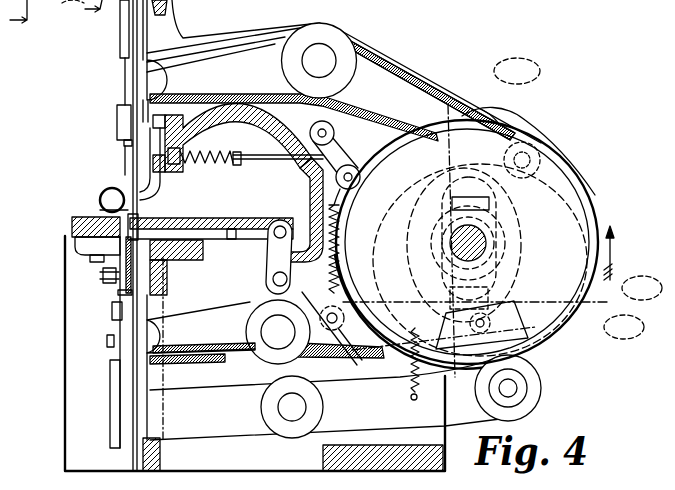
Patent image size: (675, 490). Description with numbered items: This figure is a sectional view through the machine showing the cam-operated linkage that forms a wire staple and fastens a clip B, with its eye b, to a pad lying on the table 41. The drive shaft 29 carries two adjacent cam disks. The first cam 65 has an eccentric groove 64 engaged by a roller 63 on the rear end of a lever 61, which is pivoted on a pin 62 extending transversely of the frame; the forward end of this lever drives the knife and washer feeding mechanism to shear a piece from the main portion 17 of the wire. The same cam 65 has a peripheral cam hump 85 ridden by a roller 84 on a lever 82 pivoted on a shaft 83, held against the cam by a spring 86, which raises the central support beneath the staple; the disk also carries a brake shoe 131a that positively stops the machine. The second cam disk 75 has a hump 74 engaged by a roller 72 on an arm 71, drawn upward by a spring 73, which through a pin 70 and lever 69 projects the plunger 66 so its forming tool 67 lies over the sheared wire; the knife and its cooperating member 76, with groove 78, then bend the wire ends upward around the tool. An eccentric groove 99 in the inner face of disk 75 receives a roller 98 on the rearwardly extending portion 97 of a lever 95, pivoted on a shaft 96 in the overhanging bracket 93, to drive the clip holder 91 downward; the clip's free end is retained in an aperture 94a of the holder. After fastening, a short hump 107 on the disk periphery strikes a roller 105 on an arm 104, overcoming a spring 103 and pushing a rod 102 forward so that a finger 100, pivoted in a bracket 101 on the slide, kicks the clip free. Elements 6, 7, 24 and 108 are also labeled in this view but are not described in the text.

The view arrow 6 is at (82, 9).
The view arrow 7 is at (13, 14).
The main portion of the wire 17 is at (117, 261).
The frame 24 is at (68, 334).
The drive shaft 29 is at (484, 228).
The table 41 is at (100, 216).
The lever 61 is at (190, 336).
The pin 62 is at (285, 340).
The roller 63 is at (506, 307).
The eccentric groove 64 is at (528, 295).
The cam 65 is at (577, 242).
The plunger 66 is at (170, 233).
The forming tool 67 is at (176, 267).
The lever 69 is at (268, 266).
The pin 70 is at (279, 281).
The arm 71 is at (287, 306).
The roller 72 is at (362, 348).
The spring 73 is at (341, 263).
The hump 74 is at (493, 111).
The cam disk 75 is at (590, 191).
The cooperating member 76 is at (116, 283).
The groove 78 is at (135, 222).
The lever 82 is at (173, 437).
The shaft 83 is at (300, 411).
The roller 84 is at (542, 389).
The cam hump 85 is at (413, 368).
The spring 86 is at (419, 388).
The clip holder 91 is at (104, 198).
The overhanging bracket 93 is at (170, 35).
The aperture 94a is at (117, 183).
The lever 95 is at (253, 57).
The shaft 96 is at (336, 55).
The rearwardly extending portion 97 is at (430, 94).
The roller 98 is at (541, 148).
The eccentric groove 99 is at (518, 126).
The finger 100 is at (159, 185).
The bracket 101 is at (162, 109).
The rod 102 is at (250, 160).
The spring 103 is at (232, 138).
The arm 104 is at (333, 137).
The roller 105 is at (320, 190).
The hump 107 is at (460, 115).
The belt 108 is at (383, 136).
The brake shoe 131a is at (519, 333).
The clip B is at (72, 229).
The eye of the clip b is at (75, 241).